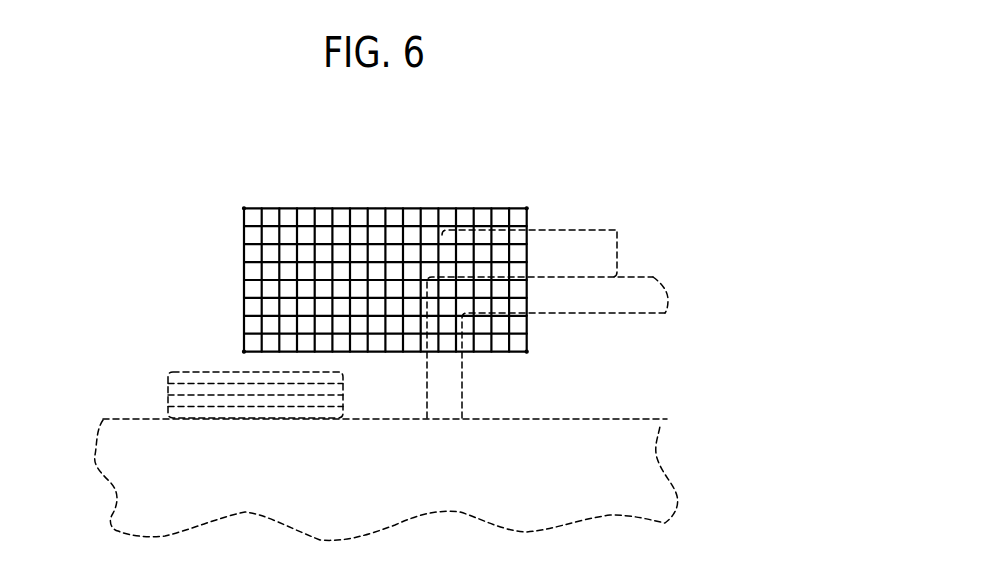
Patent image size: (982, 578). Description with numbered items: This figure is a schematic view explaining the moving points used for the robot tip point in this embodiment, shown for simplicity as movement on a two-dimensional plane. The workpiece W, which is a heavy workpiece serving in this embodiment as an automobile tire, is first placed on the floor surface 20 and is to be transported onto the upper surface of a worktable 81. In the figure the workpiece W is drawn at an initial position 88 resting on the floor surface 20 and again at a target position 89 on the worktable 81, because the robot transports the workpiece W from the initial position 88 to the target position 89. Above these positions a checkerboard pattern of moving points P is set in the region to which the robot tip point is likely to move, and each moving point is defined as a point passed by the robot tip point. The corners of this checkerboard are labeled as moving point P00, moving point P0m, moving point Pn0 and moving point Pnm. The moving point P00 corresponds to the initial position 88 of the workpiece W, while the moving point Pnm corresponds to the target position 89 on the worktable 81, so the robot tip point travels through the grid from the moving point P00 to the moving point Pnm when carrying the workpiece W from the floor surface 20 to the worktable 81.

The floor surface 20 is at (637, 418).
The initial position 88 is at (168, 372).
The target position 89 is at (570, 230).
The worktable 81 is at (652, 277).
The workpiece W is at (168, 385).
The moving point Pn0 is at (244, 208).
The moving point Pnm is at (527, 208).
The moving point P00 is at (244, 351).
The moving point P0m is at (527, 352).